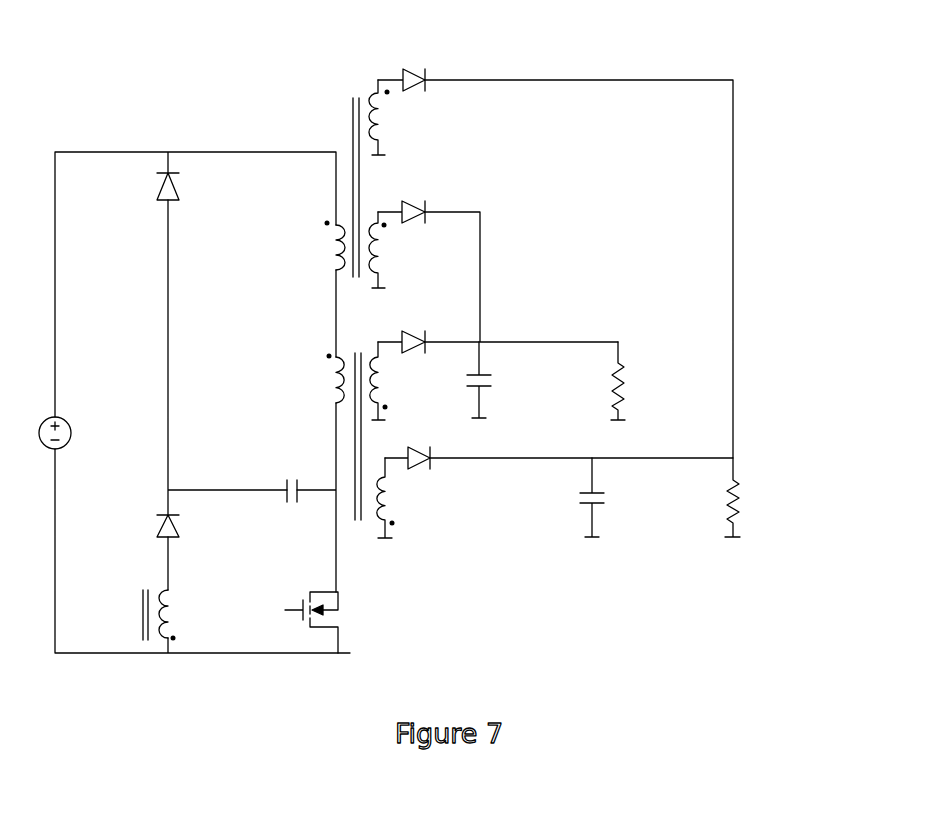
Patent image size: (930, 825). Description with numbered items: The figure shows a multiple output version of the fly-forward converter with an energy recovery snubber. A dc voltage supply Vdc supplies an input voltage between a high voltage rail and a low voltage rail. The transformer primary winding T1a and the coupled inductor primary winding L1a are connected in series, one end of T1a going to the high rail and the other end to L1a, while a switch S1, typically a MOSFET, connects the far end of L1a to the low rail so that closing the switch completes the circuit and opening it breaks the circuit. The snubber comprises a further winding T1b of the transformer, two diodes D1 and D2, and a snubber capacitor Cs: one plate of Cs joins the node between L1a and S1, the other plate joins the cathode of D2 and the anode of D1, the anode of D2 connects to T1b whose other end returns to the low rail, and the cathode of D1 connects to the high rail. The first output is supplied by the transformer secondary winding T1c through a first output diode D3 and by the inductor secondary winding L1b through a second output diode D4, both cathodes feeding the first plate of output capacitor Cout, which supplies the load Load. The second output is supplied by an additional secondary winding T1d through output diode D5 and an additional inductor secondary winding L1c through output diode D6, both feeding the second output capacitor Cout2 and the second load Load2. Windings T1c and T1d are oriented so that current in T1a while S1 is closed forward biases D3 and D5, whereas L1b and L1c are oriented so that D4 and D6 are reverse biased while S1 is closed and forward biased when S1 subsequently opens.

The dc voltage supply Vdc is at (83, 420).
The diode D1 is at (193, 189).
The diode D2 is at (189, 528).
The first output diode D3 is at (409, 193).
The second output diode D4 is at (406, 327).
The output diode D5 is at (407, 63).
The output diode D6 is at (415, 441).
The primary winding of transformer T1 T1a is at (310, 246).
The further winding of transformer T1 T1b is at (193, 610).
The secondary winding of transformer T1 T1c is at (399, 250).
The additional secondary winding of transformer T1 T1d is at (405, 117).
The primary winding of coupled inductor L1 L1a is at (310, 378).
The secondary winding of coupled inductor L1 L1b is at (400, 381).
The additional secondary winding of coupled inductor L1 L1c is at (410, 498).
The snubber capacitor Cs is at (281, 477).
The switch S1 is at (336, 622).
The output capacitor Cout is at (515, 380).
The load Load is at (655, 381).
The second output capacitor Cout2 is at (636, 497).
The second output load Load2 is at (774, 497).